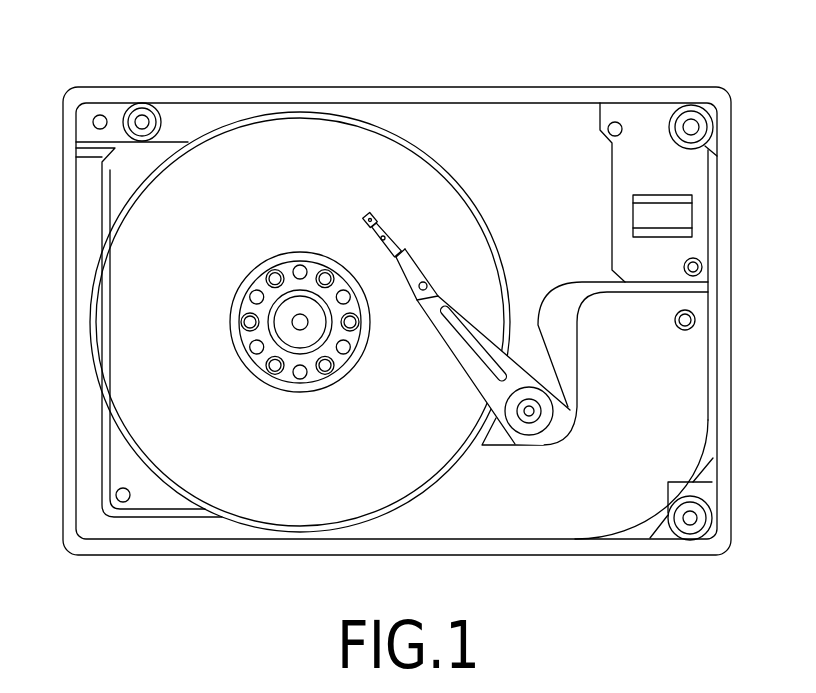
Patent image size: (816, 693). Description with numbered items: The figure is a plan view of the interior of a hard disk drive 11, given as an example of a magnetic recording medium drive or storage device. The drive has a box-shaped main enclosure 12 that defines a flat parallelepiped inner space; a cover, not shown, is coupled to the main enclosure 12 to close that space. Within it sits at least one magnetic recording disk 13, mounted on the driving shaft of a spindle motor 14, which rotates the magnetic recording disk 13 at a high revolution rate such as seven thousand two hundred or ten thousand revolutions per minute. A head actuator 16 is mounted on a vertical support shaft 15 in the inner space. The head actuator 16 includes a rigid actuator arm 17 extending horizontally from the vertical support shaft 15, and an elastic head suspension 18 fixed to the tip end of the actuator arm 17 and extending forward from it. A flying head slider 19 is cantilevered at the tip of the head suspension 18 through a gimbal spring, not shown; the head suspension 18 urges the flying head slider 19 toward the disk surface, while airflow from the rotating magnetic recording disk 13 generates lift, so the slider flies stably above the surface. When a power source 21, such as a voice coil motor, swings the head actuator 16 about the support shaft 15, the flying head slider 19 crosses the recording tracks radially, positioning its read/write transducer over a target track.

The hard disk drive 11 is at (434, 84).
The main enclosure 12 is at (299, 535).
The magnetic recording disk 13 is at (500, 222).
The spindle motor 14 is at (277, 333).
The vertical support shaft 15 is at (533, 415).
The head actuator 16 is at (449, 344).
The actuator arm 17 is at (462, 360).
The head suspension 18 is at (398, 248).
The flying head slider 19 is at (405, 199).
The power source 21 is at (634, 539).